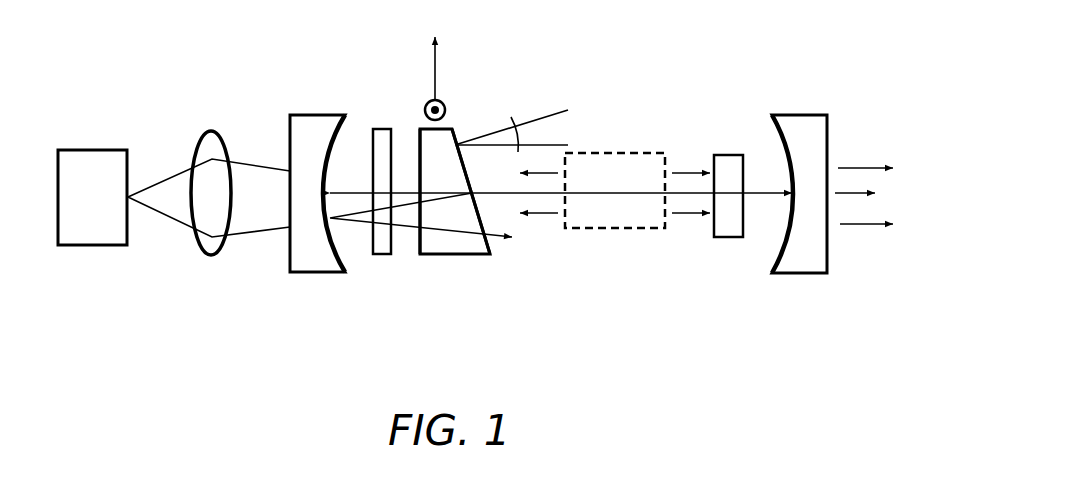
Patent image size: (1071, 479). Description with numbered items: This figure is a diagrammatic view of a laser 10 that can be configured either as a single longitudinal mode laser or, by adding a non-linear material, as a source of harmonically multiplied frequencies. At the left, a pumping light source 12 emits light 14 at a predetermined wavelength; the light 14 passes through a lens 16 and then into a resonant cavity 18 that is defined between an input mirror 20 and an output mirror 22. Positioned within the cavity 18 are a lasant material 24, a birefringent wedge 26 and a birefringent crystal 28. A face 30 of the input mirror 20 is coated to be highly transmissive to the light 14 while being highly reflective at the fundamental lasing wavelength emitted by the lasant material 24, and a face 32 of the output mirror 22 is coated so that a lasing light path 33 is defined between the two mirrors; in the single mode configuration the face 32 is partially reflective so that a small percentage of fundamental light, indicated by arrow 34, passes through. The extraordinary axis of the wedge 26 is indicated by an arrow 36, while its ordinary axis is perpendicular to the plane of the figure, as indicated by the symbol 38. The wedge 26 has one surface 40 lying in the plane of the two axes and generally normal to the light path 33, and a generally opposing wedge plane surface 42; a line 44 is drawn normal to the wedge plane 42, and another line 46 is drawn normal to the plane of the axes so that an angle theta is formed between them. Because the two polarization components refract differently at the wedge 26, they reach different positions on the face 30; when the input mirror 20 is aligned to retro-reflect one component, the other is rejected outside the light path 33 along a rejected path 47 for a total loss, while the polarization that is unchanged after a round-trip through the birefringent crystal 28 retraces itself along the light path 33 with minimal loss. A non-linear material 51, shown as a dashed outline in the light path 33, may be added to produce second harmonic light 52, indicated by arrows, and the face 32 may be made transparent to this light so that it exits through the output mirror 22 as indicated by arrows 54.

The laser 10 is at (632, 45).
The pumping light source 12 is at (110, 208).
The light 14 is at (173, 175).
The lens 16 is at (203, 252).
The resonant cavity 18 is at (637, 142).
The input mirror 20 is at (310, 215).
The output mirror 22 is at (777, 210).
The lasant material 24 is at (382, 127).
The birefringent wedge 26 is at (448, 257).
The birefringent crystal 28 is at (733, 238).
The face of input mirror 30 is at (330, 154).
The face of output mirror 32 is at (773, 120).
The lasing light path 33 is at (412, 190).
The arrow indicating fundamental output light 34 is at (873, 197).
The arrow indicating extraordinary axis 36 is at (435, 70).
The symbol denoting ordinary axis 38 is at (442, 100).
The surface of wedge 40 is at (420, 243).
The wedge plane surface 42 is at (463, 160).
The line normal to wedge plane 44 is at (542, 115).
The line normal to the O_W–E_W plane 46 is at (568, 142).
The rejected path 47 is at (410, 227).
The non-linear material 51 is at (587, 228).
The second harmonic light 52 is at (542, 215).
The arrows indicating transmitted second harmonic light 54 is at (860, 167).